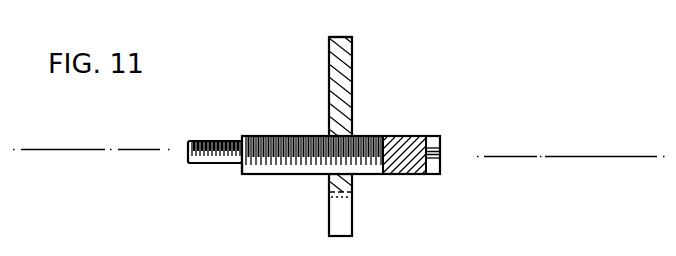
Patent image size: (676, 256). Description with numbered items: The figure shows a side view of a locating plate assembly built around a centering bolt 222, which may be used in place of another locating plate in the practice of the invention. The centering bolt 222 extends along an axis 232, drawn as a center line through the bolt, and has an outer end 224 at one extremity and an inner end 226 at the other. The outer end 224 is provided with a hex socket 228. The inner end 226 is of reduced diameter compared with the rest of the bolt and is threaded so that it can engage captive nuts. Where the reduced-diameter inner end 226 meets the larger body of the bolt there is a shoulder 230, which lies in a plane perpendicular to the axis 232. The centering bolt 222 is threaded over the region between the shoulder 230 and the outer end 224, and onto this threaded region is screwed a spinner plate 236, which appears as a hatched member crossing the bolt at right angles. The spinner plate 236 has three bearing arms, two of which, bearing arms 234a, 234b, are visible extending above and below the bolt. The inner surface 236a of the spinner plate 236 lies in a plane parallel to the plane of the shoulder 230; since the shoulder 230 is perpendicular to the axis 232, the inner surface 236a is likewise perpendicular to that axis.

The centering bolt 222 is at (357, 157).
The outer end 224 is at (442, 143).
The inner end 226 is at (208, 139).
The hex socket 228 is at (442, 158).
The shoulder 230 is at (240, 167).
The axis 232 is at (88, 135).
The bearing arm 234a is at (354, 87).
The bearing arm 234b is at (352, 217).
The spinner plate 236 is at (349, 127).
The inner surface 236a is at (330, 48).